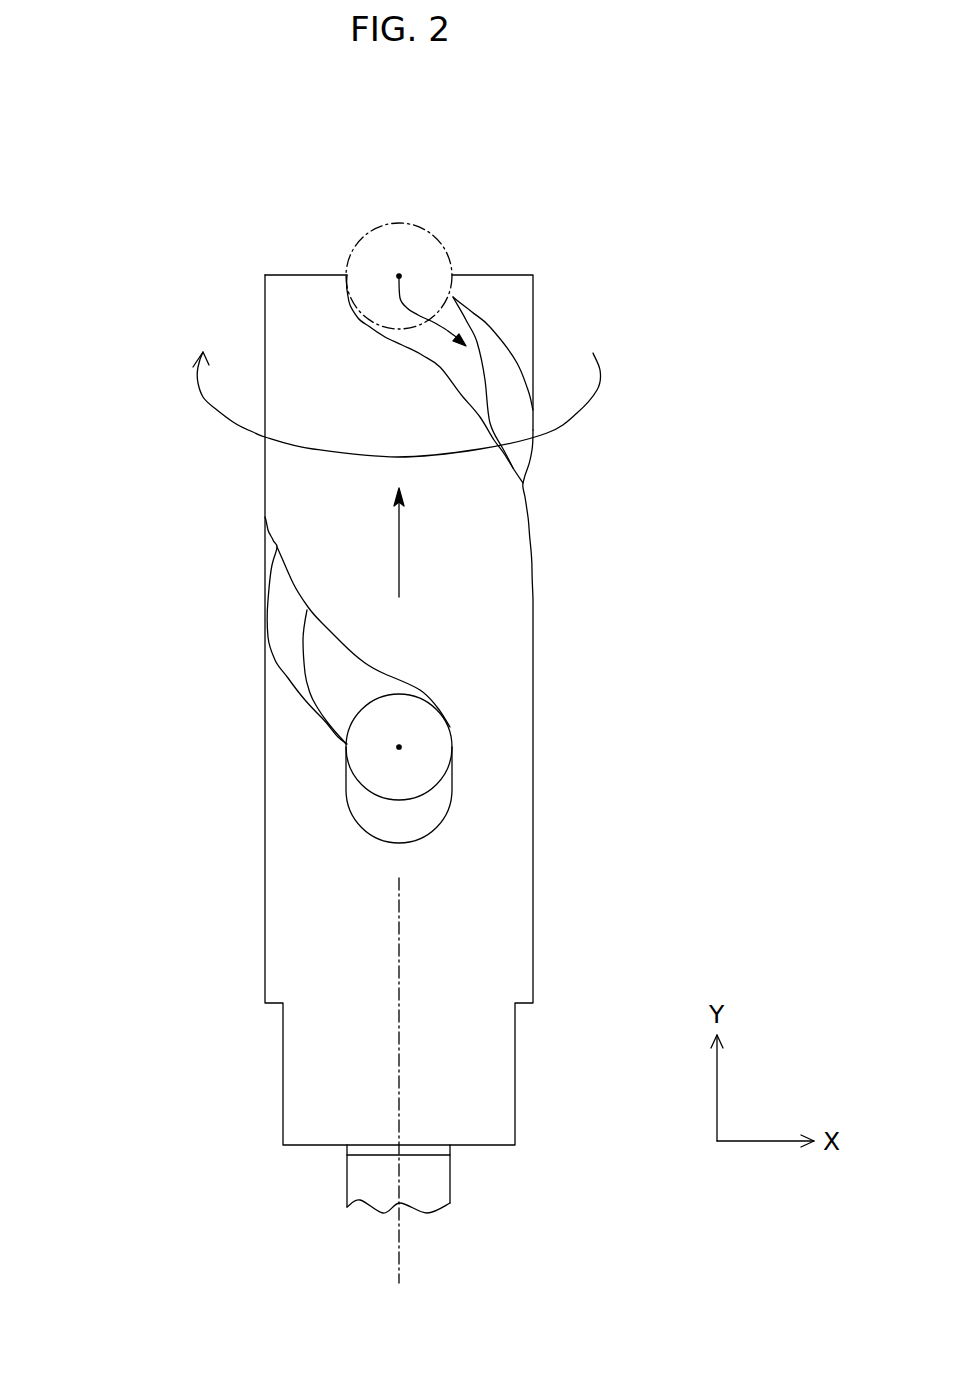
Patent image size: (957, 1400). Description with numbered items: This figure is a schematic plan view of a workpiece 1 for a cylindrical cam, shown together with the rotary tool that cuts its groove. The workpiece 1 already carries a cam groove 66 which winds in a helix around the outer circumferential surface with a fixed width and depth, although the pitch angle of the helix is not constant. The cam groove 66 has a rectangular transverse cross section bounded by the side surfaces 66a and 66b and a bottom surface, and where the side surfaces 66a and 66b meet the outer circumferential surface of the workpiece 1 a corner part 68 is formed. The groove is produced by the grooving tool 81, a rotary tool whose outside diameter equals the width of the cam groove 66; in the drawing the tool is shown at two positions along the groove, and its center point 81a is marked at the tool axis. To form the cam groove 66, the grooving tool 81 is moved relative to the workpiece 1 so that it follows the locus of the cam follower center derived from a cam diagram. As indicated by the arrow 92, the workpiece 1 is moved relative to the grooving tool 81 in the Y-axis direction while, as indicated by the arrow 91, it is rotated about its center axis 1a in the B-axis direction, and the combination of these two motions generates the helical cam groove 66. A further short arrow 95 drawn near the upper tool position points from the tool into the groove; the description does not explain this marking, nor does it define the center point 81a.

The workpiece 1 is at (513, 961).
The center axis 1a is at (399, 1095).
The cam groove 66 is at (638, 336).
The side surface 66a is at (493, 343).
The side surface 66b is at (495, 427).
The corner part 68 is at (293, 580).
The grooving tool 81 is at (373, 227).
The center of spherical portion 81a is at (399, 276).
The arrow 91 is at (235, 422).
The arrow 92 is at (399, 560).
The discharge direction 95 is at (453, 297).